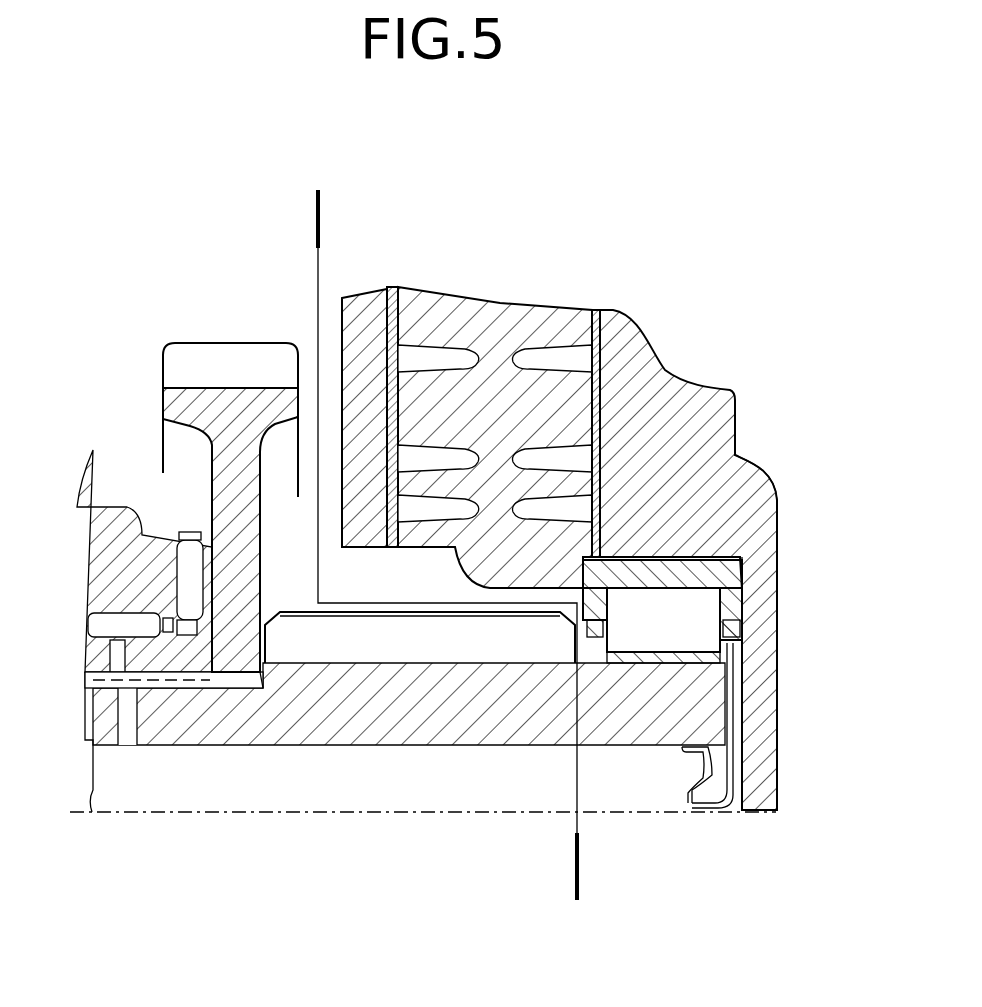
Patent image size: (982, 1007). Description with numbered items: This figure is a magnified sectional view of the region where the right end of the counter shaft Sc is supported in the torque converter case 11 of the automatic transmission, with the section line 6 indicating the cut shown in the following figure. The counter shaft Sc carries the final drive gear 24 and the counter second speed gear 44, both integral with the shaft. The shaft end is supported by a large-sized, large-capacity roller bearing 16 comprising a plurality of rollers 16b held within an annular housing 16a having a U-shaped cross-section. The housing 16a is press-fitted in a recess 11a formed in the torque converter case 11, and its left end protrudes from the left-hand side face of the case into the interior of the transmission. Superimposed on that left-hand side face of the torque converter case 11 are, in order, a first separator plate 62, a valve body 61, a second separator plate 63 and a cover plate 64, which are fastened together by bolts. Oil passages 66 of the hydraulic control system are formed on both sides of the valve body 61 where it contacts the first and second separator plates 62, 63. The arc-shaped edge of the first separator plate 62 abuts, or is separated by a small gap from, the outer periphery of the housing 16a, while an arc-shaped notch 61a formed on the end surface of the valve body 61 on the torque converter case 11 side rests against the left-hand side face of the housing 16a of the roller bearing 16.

The section line 6- 6 is at (318, 203).
The torque converter case 11 is at (667, 357).
The recess 11a is at (742, 588).
The roller bearing 16 is at (717, 553).
The housing 16a is at (672, 560).
The rollers 16b is at (645, 653).
The final drive gear 24 is at (435, 622).
The counter second speed gear 44 is at (237, 352).
The valve body 61 is at (530, 372).
The arc-shaped notch 61a is at (595, 567).
The first separator plate 62 is at (595, 312).
The second separator plate 63 is at (393, 287).
The cover plate 64 is at (363, 297).
The oil passages 66 is at (568, 510).
The counter shaft Sc is at (348, 712).